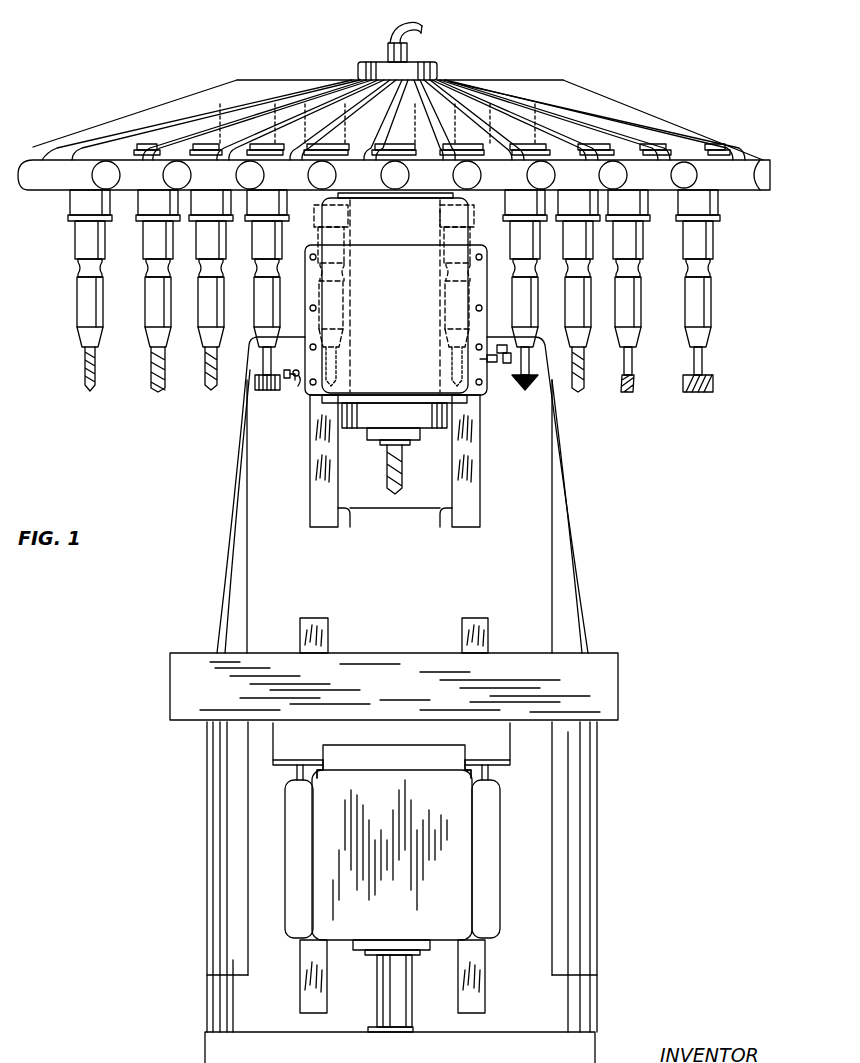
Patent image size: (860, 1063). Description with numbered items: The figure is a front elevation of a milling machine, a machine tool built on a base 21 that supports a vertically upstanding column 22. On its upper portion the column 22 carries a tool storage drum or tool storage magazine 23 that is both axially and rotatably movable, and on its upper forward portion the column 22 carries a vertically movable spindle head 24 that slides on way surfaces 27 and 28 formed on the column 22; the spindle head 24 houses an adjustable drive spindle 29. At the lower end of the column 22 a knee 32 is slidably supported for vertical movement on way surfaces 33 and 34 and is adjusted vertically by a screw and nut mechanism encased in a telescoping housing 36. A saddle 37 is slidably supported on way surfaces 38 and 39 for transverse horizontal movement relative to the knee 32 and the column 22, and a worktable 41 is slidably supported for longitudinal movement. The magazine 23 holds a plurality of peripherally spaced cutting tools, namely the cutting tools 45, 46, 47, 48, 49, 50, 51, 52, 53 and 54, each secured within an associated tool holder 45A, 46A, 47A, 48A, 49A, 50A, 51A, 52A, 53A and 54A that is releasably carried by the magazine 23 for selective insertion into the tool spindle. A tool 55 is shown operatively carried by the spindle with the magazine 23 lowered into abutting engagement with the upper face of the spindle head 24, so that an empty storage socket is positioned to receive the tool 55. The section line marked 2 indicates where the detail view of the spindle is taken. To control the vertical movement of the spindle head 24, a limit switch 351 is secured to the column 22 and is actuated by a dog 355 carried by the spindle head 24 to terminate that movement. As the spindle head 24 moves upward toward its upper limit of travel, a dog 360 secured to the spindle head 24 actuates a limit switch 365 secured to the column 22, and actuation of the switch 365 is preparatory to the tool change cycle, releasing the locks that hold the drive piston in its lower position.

The section line 2- 2 is at (410, 18).
The base 21 is at (578, 1050).
The column 22 is at (540, 578).
The tool storage drum 23 is at (480, 76).
The spindle head 24 is at (376, 388).
The way surface 27 is at (472, 482).
The way surface 28 is at (310, 517).
The drive spindle 29 is at (422, 432).
The knee 32 is at (462, 916).
The way surface 33 is at (305, 1006).
The way surface 34 is at (475, 1003).
The telescoping housing 36 is at (395, 1001).
The saddle 37 is at (497, 750).
The way surface 38 is at (327, 750).
The way surface 39 is at (462, 751).
The worktable 41 is at (408, 668).
The cutting tool 45 is at (82, 371).
The tool holder 45A is at (86, 301).
The cutting tool 46 is at (152, 378).
The tool holder 46A is at (158, 315).
The cutting tool 47 is at (207, 384).
The tool holder 47A is at (200, 322).
The cutting tool 48 is at (256, 384).
The tool holder 48A is at (264, 315).
The cutting tool 49 is at (330, 370).
The tool holder 49A is at (318, 320).
The cutting tool 50 is at (458, 362).
The tool holder 50A is at (460, 318).
The cutting tool 51 is at (524, 384).
The tool holder 51A is at (525, 308).
The cutting tool 52 is at (582, 388).
The tool holder 52A is at (574, 346).
The cutting tool 53 is at (628, 390).
The tool holder 53A is at (632, 340).
The cutting tool 54 is at (710, 385).
The tool holder 54A is at (703, 335).
The tool 55 is at (398, 487).
The limit switch 351 is at (288, 388).
The dog 355 is at (293, 390).
The dog 360 is at (490, 362).
The limit switch 365 is at (496, 350).